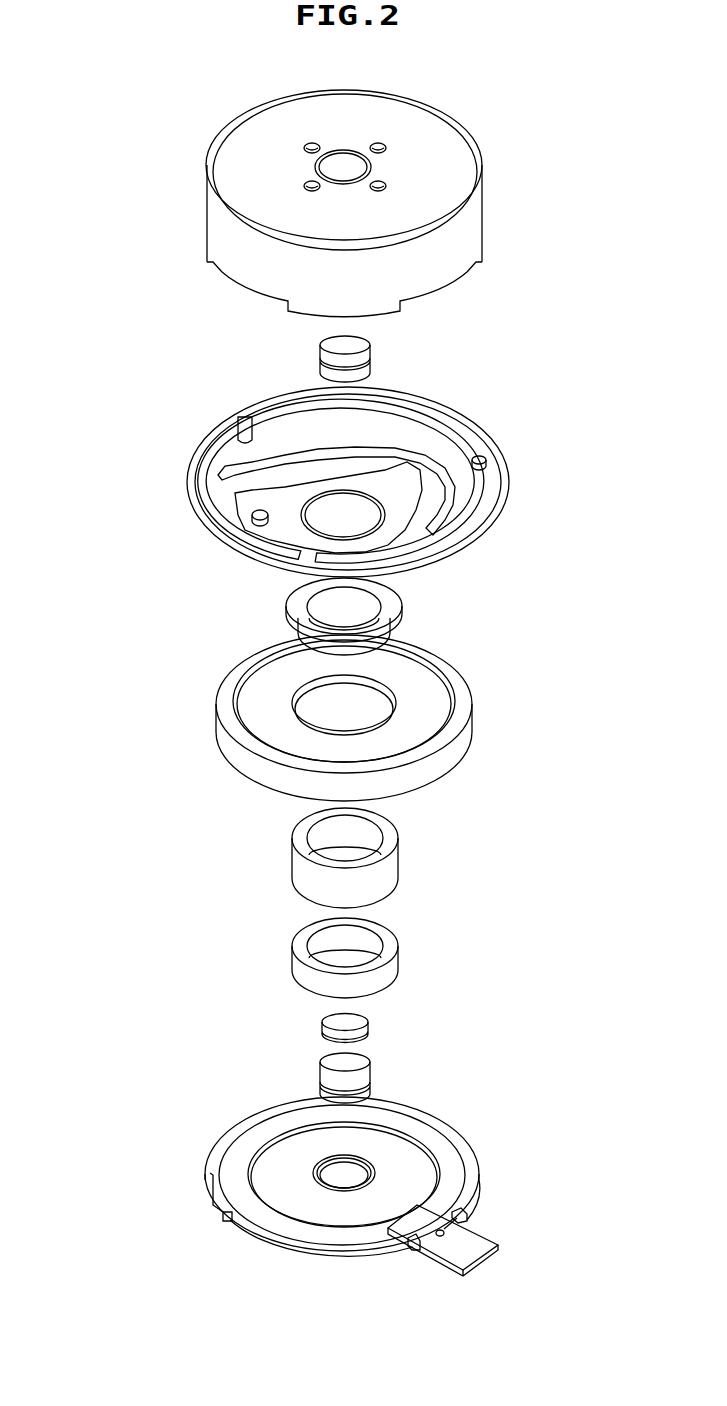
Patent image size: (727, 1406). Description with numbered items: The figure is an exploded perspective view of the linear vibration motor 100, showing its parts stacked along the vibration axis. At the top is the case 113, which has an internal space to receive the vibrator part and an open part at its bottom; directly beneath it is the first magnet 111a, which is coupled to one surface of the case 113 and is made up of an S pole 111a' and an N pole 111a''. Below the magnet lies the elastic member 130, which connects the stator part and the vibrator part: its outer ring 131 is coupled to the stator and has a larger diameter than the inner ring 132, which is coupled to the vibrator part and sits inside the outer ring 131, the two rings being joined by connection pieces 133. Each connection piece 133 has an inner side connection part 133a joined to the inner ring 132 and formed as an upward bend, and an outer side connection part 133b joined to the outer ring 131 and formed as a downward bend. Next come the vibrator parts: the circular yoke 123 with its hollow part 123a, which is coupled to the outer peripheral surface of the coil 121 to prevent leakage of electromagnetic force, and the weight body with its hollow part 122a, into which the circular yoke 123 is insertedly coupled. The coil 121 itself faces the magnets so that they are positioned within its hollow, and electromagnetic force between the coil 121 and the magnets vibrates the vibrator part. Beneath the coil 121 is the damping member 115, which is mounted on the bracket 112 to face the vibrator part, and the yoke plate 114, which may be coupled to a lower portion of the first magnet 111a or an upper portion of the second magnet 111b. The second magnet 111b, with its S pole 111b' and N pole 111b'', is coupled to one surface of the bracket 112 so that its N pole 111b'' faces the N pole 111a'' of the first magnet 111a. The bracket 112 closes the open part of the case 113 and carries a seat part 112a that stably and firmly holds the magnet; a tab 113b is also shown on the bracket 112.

The linear vibration motor 100 is at (113, 127).
The case 113 is at (213, 229).
The first magnet 111a is at (289, 354).
The S pole 111a' is at (413, 343).
The N pole 111a'' is at (412, 374).
The elastic member 130 is at (355, 481).
The outer ring 131 is at (192, 468).
The inner ring 132 is at (400, 512).
The connection piece 133 is at (210, 496).
The inner side connection part 133a is at (470, 474).
The outer side connection part 133b is at (238, 432).
The circular yoke 123 is at (371, 616).
The hollow part 123a is at (336, 610).
The hollow part 122a is at (338, 690).
The coil 121 is at (300, 835).
The damping member 115 is at (300, 945).
The yoke plate 114 is at (330, 1023).
The second magnet 111b is at (300, 1091).
The S pole 111b' is at (424, 1106).
The N pole 111b'' is at (406, 1072).
The bracket 112 is at (333, 1186).
The seat part 112a is at (372, 1170).
The terminal tab 113b is at (462, 1214).